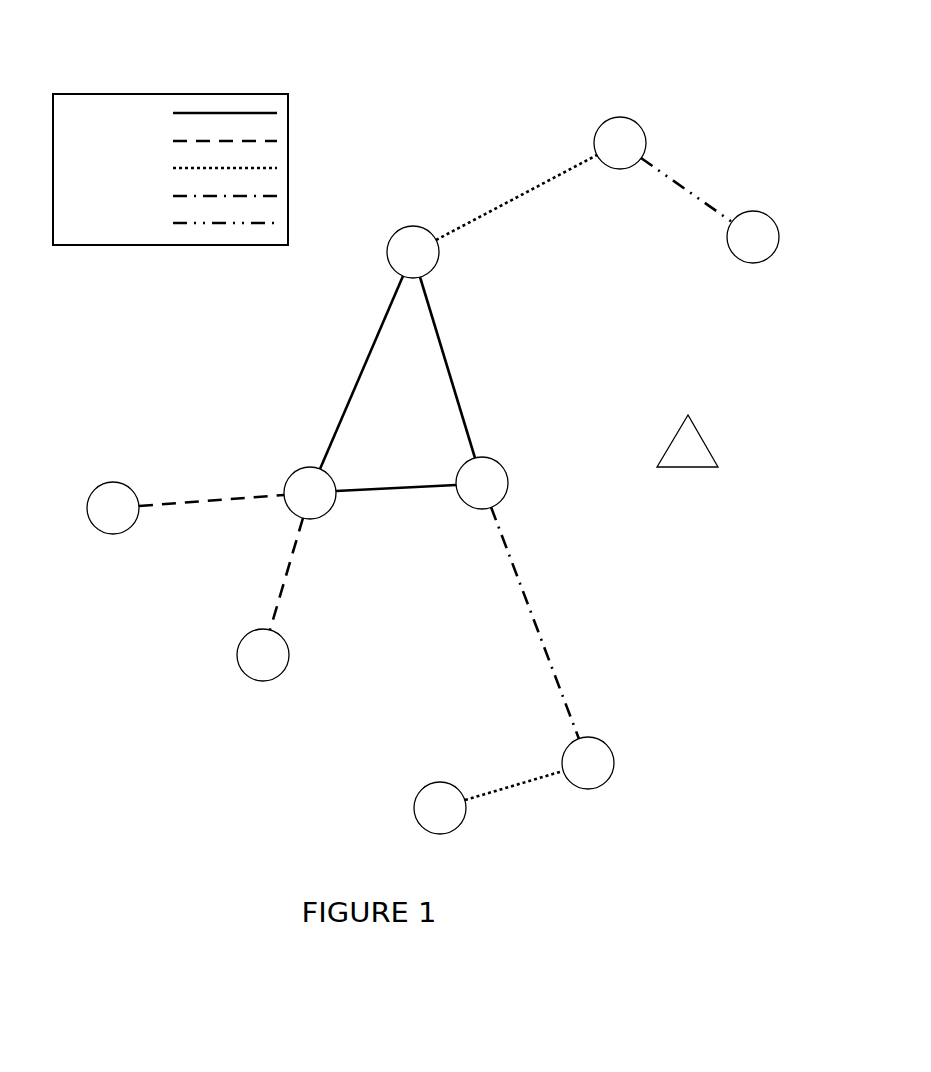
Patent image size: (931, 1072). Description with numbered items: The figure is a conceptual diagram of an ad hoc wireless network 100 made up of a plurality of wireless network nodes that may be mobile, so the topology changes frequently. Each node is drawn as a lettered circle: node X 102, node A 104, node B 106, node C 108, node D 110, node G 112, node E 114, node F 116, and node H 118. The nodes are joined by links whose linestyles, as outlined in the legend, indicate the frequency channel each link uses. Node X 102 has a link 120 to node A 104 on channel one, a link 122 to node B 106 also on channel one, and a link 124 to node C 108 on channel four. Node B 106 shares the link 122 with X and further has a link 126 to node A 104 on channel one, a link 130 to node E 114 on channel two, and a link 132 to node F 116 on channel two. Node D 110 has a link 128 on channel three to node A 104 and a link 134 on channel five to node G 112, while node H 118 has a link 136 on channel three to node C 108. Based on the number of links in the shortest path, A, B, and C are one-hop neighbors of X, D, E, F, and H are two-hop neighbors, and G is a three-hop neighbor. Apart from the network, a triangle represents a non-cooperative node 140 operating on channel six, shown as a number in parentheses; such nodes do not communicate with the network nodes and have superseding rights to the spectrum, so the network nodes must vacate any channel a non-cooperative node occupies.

The ad hoc wireless network 100 is at (348, 34).
The node X 102 is at (497, 453).
The node A 104 is at (413, 225).
The node B 106 is at (328, 472).
The node C 108 is at (615, 763).
The node D 110 is at (617, 170).
The node G 112 is at (753, 263).
The node E 114 is at (113, 482).
The node F 116 is at (290, 655).
The node H 118 is at (418, 790).
The link 120 is at (463, 397).
The link 122 is at (360, 495).
The link 124 is at (547, 652).
The link 126 is at (322, 417).
The link 128 is at (543, 178).
The link 130 is at (240, 495).
The link 132 is at (273, 602).
The link 134 is at (705, 208).
The link 136 is at (508, 788).
The non-cooperative node 140 is at (687, 461).